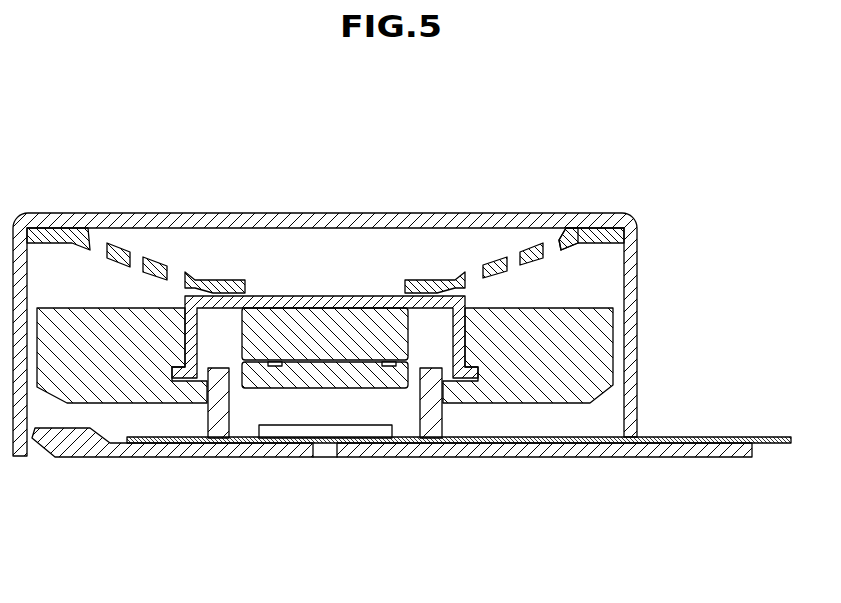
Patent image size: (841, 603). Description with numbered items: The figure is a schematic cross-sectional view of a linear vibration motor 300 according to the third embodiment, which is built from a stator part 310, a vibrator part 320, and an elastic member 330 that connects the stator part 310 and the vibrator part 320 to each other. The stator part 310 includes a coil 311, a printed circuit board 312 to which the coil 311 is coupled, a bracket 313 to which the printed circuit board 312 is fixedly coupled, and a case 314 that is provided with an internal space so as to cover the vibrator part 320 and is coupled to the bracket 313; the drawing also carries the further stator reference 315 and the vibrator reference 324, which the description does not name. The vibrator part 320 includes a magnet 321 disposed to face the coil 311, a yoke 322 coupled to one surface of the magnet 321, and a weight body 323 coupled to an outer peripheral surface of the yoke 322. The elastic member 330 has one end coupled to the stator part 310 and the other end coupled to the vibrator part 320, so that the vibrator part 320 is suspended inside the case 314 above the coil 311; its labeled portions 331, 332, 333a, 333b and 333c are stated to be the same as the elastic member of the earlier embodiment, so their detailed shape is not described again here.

The linear vibration motor 300 is at (45, 125).
The stator part 310 is at (411, 482).
The coil 311 is at (222, 418).
The printed circuit board 312 is at (398, 440).
The bracket 313 is at (230, 545).
The case 314 is at (639, 318).
The coil 315 is at (295, 430).
The vibrator part 320 is at (325, 257).
The magnet 321 is at (260, 318).
The yoke 322 is at (197, 302).
The weight body 323 is at (115, 318).
The weight plate 324 is at (333, 375).
The elastic member 330 is at (326, 205).
The outer fixing part 331 is at (602, 237).
The inner fixing part 332 is at (420, 283).
The spring leg portion a 333a is at (455, 283).
The spring leg portion b 333b is at (567, 233).
The spring leg portion c 333c is at (113, 243).